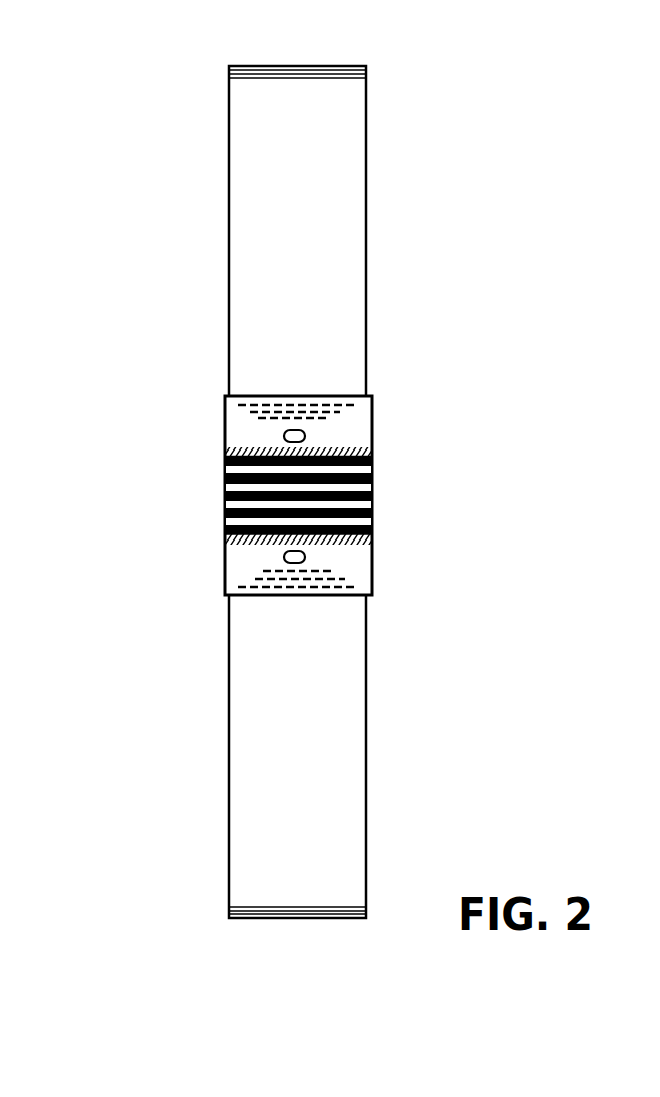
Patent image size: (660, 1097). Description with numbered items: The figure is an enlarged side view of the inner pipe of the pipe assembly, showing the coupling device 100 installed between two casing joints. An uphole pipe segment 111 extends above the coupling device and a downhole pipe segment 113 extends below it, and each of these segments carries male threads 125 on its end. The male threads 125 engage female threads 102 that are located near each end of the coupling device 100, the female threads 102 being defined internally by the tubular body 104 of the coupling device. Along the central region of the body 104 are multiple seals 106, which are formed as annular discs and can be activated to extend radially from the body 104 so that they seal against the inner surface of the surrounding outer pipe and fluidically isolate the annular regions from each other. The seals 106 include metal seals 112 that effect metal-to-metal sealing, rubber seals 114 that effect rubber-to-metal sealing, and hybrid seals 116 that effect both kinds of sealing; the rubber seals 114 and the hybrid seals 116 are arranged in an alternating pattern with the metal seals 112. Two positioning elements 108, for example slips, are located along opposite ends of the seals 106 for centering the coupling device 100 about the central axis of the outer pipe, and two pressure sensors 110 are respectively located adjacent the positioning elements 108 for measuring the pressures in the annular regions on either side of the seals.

The coupling device 100 is at (448, 357).
The female threads 102 is at (218, 395).
The tubular body 104 is at (225, 432).
The seals 106 is at (347, 524).
The positioning elements 108 is at (373, 452).
The pressure sensors 110 is at (305, 436).
The uphole pipe segment 111 is at (367, 155).
The metal seals 112 is at (225, 472).
The downhole pipe segment 113 is at (228, 825).
The rubber seals 114 is at (225, 462).
The hybrid seals 116 is at (225, 497).
The male threads 125 is at (380, 72).